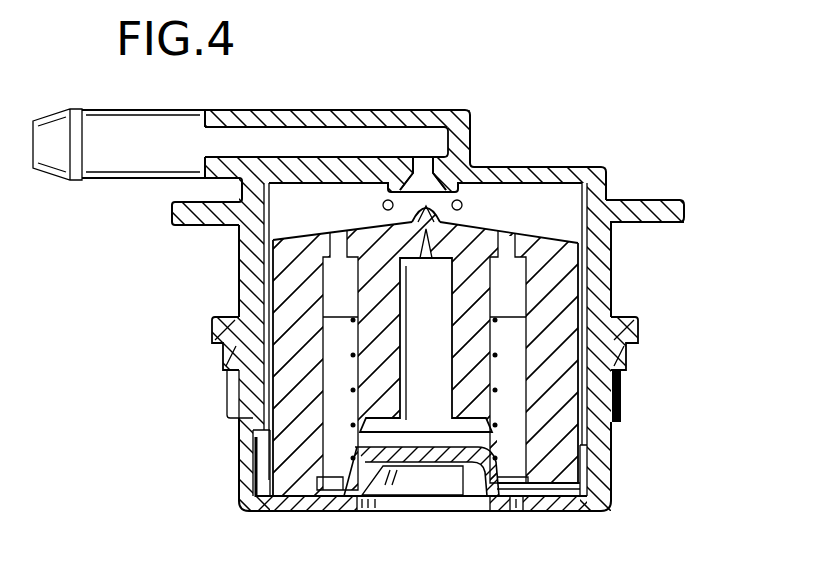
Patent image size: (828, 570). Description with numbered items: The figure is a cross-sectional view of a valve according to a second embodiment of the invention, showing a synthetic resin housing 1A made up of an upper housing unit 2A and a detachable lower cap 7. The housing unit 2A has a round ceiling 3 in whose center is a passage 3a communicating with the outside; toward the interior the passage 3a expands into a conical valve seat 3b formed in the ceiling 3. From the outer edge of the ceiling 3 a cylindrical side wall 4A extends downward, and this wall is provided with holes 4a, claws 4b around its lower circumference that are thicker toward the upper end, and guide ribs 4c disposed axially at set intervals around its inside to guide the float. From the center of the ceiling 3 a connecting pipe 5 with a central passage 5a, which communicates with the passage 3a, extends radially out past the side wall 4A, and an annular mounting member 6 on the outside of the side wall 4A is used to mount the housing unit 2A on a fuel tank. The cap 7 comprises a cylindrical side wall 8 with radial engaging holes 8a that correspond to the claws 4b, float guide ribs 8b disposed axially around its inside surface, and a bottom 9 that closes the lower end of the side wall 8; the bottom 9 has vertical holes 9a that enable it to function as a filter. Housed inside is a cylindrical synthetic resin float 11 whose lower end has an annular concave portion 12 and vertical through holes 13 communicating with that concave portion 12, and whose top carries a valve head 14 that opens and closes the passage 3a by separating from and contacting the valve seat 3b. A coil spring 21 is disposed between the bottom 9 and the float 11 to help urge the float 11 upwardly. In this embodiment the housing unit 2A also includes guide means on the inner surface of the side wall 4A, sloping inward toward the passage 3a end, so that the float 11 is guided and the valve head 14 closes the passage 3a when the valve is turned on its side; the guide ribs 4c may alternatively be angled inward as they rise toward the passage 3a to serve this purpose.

The housing 1A is at (224, 297).
The housing unit 2A is at (601, 155).
The ceiling 3 is at (550, 166).
The passage 3a is at (420, 165).
The valve seat 3b is at (537, 139).
The side wall 4A is at (604, 297).
The holes 4a is at (382, 205).
The claws 4b is at (230, 384).
The guide ribs 4c is at (264, 238).
The connecting pipe 5 is at (148, 136).
The passage 5a is at (236, 135).
The annular mounting member 6 is at (175, 210).
The cap 7 is at (614, 517).
The side wall 8 is at (240, 470).
The engaging holes 8a is at (655, 427).
The float guide ribs 8b is at (252, 486).
The bottom 9 is at (343, 507).
The vertical holes 9a is at (574, 510).
The float 11 is at (568, 367).
The annular concave portion 12 is at (603, 476).
The vertical through holes 13 is at (510, 242).
The valve head 14 is at (426, 205).
The coil spring 21 is at (463, 497).